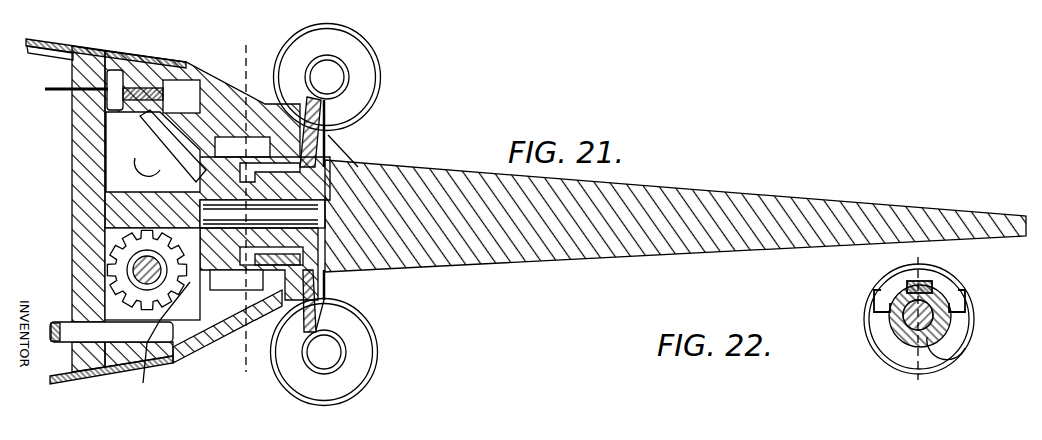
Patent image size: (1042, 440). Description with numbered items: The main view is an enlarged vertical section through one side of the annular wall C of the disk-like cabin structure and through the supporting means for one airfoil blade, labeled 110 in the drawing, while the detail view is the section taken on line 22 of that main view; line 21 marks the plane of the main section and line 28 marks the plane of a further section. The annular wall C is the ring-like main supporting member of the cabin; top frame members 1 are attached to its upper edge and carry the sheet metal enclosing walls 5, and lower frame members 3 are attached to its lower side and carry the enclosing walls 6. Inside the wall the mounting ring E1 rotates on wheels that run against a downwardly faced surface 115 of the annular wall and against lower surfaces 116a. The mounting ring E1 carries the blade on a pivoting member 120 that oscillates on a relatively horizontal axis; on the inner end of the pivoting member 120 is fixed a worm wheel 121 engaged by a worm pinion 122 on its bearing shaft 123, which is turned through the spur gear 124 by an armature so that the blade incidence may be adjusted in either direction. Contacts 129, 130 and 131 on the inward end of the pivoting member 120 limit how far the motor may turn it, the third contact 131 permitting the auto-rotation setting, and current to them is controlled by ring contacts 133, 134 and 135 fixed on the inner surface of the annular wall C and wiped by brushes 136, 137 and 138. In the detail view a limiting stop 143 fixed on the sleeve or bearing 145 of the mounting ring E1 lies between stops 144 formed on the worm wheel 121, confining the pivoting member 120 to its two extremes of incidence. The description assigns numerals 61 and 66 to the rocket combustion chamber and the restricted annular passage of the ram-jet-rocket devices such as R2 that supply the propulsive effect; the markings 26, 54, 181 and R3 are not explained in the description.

In FIG. 21, the frame members 1 is at (32, 38).
In FIG. 21, the annular wall C is at (26, 44).
In FIG. 21, the surface metal enclosing walls 5 is at (48, 38).
In FIG. 21, the ring contact 134 is at (120, 46).
In FIG. 21, the ring contact 133 is at (142, 62).
In FIG. 21, the ring contact 135 is at (56, 88).
In FIG. 21, the brush 136 is at (127, 107).
In FIG. 21, the brush 137 is at (150, 130).
In FIG. 21, the brush 138 is at (63, 144).
In FIG. 21, the section line 28 is at (160, 160).
In FIG. 21, the contact 129 is at (150, 178).
In FIG. 21, the contact 130 is at (135, 191).
In FIG. 21, the third contact 131 is at (130, 212).
In FIG. 21, the bearing shaft 123 is at (115, 239).
In FIG. 21, the worm pinion 122 is at (120, 261).
In FIG. 21, the rod 54 is at (54, 324).
In FIG. 21, the frame members 3 is at (48, 374).
In FIG. 21, the surface metal enclosing walls 6 is at (50, 380).
In FIG. 21, the spur gear 124 is at (143, 383).
In FIG. 21, the section line 22 is at (233, 90).
In FIG. 21, the reference plane 26 is at (245, 43).
In FIG. 21, the downwardly faced surface 115 is at (263, 103).
In FIG. 21, the surfaces 116a is at (258, 300).
In FIG. 21, the rocket combustion chamber 61 is at (337, 67).
In FIG. 21, the restricted annular intermediate passage 66 is at (337, 47).
In FIG. 21, the ram-jet rocket device R2 is at (383, 86).
In FIG. 21, the radius R3 is at (382, 362).
In FIG. 21, the mounting ring E1 is at (330, 158).
In FIG. 21, the pivoting member 120 is at (340, 173).
In FIG. 22, the pivoting member 120 is at (897, 335).
In FIG. 21, the cavity 181 is at (155, 151).
In FIG. 21, the blade 110 is at (725, 194).
In FIG. 22, the section line 21 is at (916, 258).
In FIG. 22, the limiting stop 143 is at (907, 282).
In FIG. 22, the stops 144 is at (875, 298).
In FIG. 22, the worm wheel 121 is at (865, 328).
In FIG. 22, the sleeve or bearing 145 is at (967, 350).